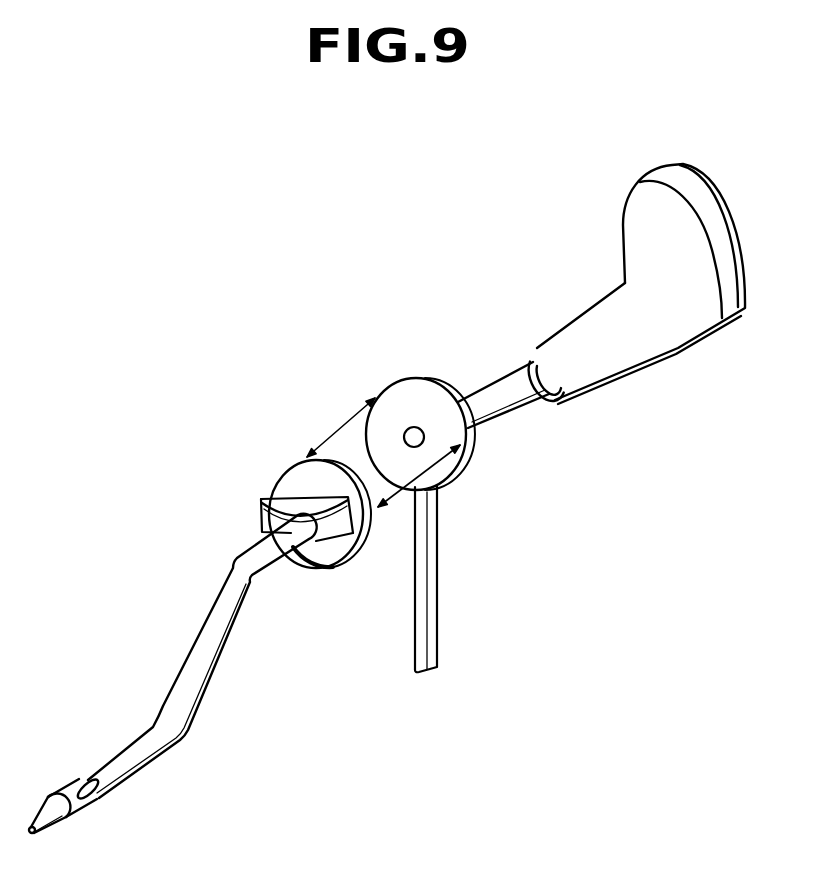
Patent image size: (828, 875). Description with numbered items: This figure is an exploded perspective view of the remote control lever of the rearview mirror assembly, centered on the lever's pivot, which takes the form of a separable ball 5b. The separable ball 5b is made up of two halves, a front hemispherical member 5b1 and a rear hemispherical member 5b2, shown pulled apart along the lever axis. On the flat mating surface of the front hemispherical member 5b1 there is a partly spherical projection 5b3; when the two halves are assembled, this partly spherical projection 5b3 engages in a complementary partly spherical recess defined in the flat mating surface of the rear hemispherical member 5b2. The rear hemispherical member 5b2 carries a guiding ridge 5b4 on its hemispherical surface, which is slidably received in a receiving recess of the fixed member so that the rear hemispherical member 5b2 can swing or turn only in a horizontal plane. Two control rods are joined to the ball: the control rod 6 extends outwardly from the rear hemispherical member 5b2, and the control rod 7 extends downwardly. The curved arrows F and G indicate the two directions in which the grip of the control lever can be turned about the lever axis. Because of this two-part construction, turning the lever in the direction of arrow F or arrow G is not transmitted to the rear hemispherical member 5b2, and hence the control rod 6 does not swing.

The separable ball 5b is at (305, 420).
The front hemispherical member 5b1 is at (477, 447).
The rear hemispherical member 5b2 is at (325, 571).
The partly spherical projection 5b3 is at (411, 427).
The guiding ridge 5b4 is at (261, 514).
The control rod 6 is at (222, 593).
The control rod 7 is at (437, 552).
The arrow F is at (547, 315).
The arrow G is at (597, 278).